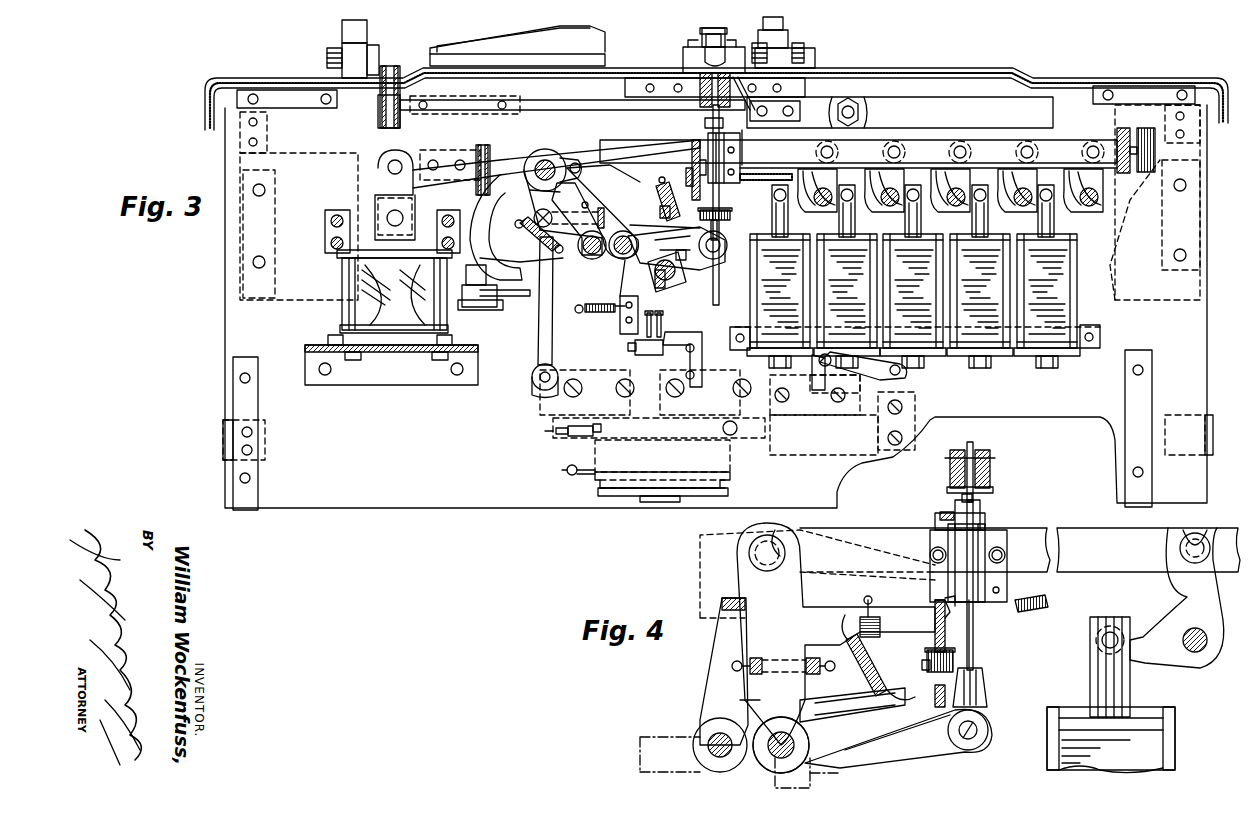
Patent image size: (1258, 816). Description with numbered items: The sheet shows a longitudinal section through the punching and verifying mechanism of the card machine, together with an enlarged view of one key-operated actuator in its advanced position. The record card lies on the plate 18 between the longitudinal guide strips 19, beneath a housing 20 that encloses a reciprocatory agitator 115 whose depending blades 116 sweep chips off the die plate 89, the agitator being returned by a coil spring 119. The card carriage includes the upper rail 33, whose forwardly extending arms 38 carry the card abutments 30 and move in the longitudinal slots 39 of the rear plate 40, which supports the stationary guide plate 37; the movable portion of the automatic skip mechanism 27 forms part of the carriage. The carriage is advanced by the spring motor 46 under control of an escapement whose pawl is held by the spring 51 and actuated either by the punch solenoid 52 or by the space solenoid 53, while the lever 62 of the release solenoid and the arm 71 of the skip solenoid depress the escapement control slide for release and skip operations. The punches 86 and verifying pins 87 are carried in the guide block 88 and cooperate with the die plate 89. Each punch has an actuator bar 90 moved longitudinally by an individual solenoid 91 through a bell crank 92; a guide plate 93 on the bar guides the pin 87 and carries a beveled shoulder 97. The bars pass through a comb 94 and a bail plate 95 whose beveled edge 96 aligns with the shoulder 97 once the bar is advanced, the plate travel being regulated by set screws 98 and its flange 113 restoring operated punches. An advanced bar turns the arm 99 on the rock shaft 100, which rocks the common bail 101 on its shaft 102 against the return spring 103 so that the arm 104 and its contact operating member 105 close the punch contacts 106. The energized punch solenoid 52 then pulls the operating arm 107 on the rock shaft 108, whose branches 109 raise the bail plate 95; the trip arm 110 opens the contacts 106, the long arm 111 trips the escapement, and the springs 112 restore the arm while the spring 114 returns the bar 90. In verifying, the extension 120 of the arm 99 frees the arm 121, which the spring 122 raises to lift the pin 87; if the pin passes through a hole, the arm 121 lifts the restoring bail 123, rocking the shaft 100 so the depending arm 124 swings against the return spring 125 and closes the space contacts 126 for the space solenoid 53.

In FIG. 3, the plate 18 is at (980, 72).
In FIG. 3, the longitudinal guide strips 19 is at (952, 72).
In FIG. 3, the housing 20 is at (708, 30).
In FIG. 3, the automatic skip mechanism 27 is at (533, 19).
In FIG. 3, the card abutments 30 is at (740, 56).
In FIG. 3, the upper longitudinal rail 33 is at (864, 115).
In FIG. 3, the stationary guide plate 37 is at (1132, 290).
In FIG. 3, the forwardly extending arms 38 is at (870, 110).
In FIG. 3, the longitudinal slots 39 is at (1058, 112).
In FIG. 3, the rear plate 40 is at (390, 505).
In FIG. 3, the spring motor 46 is at (733, 462).
In FIG. 3, the spring 51 is at (575, 438).
In FIG. 3, the punch solenoid 52 is at (370, 314).
In FIG. 3, the space solenoid 53 is at (830, 452).
In FIG. 3, the lever 62 is at (870, 380).
In FIG. 3, the arm 71 is at (825, 370).
In FIG. 3, the punch 86 is at (690, 86).
In FIG. 4, the punch 86 is at (982, 506).
In FIG. 3, the verifying pin 87 is at (719, 188).
In FIG. 4, the verifying pin 87 is at (975, 630).
In FIG. 3, the guide block 88 is at (730, 82).
In FIG. 4, the guide block 88 is at (990, 474).
In FIG. 3, the die plate 89 is at (703, 58).
In FIG. 4, the die plate 89 is at (990, 456).
In FIG. 3, the actuator bar 90 is at (990, 138).
In FIG. 4, the actuator bar 90 is at (1053, 525).
In FIG. 3, the solenoid 91 is at (1066, 293).
In FIG. 4, the solenoid 91 is at (1135, 718).
In FIG. 3, the bell crank 92 is at (1060, 195).
In FIG. 4, the bell crank 92 is at (1186, 587).
In FIG. 3, the guide plate 93 is at (728, 146).
In FIG. 4, the guide plate 93 is at (985, 600).
In FIG. 3, the comb 94 is at (744, 140).
In FIG. 3, the bail plate 95 is at (700, 198).
In FIG. 4, the bail plate 95 is at (935, 630).
In FIG. 3, the beveled edge 96 is at (688, 172).
In FIG. 4, the beveled edge 96 is at (935, 605).
In FIG. 3, the shoulder 97 is at (700, 168).
In FIG. 4, the shoulder 97 is at (948, 598).
In FIG. 3, the set screws 98 is at (730, 216).
In FIG. 4, the set screws 98 is at (927, 660).
In FIG. 3, the arm 99 is at (600, 150).
In FIG. 4, the arm 99 is at (765, 588).
In FIG. 3, the rock shaft 100 is at (620, 258).
In FIG. 4, the rock shaft 100 is at (778, 760).
In FIG. 3, the common bail 101 is at (597, 200).
In FIG. 4, the common bail 101 is at (720, 640).
In FIG. 3, the shaft 102 is at (590, 258).
In FIG. 4, the shaft 102 is at (705, 735).
In FIG. 3, the return spring 103 is at (598, 218).
In FIG. 4, the return spring 103 is at (750, 682).
In FIG. 3, the arm 104 is at (560, 270).
In FIG. 4, the arm 104 is at (665, 735).
In FIG. 3, the contact operating member 105 is at (528, 262).
In FIG. 3, the punch contacts 106 is at (512, 298).
In FIG. 3, the operating arm 107 is at (505, 150).
In FIG. 3, the rock shaft 108 is at (548, 158).
In FIG. 3, the branches 109 is at (585, 150).
In FIG. 4, the branches 109 is at (705, 565).
In FIG. 3, the trip arm 110 is at (510, 200).
In FIG. 3, the long arm 111 is at (552, 334).
In FIG. 3, the springs 112 is at (684, 280).
In FIG. 4, the springs 112 is at (878, 637).
In FIG. 3, the flange 113 is at (705, 123).
In FIG. 4, the flange 113 is at (948, 512).
In FIG. 3, the spring 114 is at (762, 182).
In FIG. 3, the reciprocatory agitator 115 is at (697, 42).
In FIG. 3, the blades 116 is at (770, 32).
In FIG. 3, the coil spring 119 is at (735, 40).
In FIG. 3, the extension 120 is at (655, 212).
In FIG. 4, the extension 120 is at (840, 715).
In FIG. 3, the arm 121 is at (700, 262).
In FIG. 4, the arm 121 is at (885, 735).
In FIG. 3, the spring 122 is at (655, 200).
In FIG. 4, the spring 122 is at (868, 672).
In FIG. 3, the restoring bail 123 is at (660, 290).
In FIG. 4, the restoring bail 123 is at (920, 690).
In FIG. 3, the depending arm 124 is at (620, 320).
In FIG. 4, the depending arm 124 is at (810, 770).
In FIG. 3, the return spring 125 is at (592, 312).
In FIG. 3, the space contacts 126 is at (661, 320).